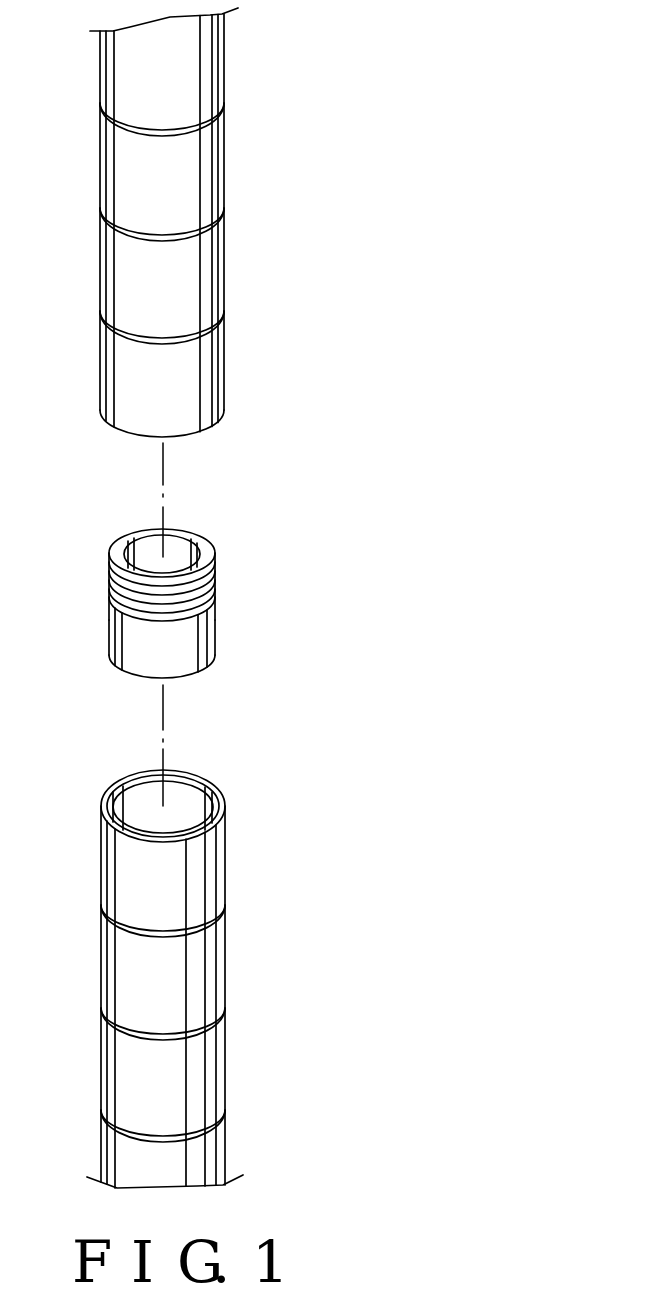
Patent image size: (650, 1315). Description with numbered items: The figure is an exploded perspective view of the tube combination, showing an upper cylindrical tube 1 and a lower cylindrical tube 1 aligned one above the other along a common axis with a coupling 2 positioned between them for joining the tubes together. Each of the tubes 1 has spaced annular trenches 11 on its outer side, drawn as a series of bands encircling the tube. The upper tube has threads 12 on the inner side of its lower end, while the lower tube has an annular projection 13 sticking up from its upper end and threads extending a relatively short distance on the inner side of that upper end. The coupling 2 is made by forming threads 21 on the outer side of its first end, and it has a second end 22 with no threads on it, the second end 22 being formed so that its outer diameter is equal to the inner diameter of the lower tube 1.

The cylindrical tube 1 is at (184, 598).
The annular trench 11 is at (192, 1135).
The threads 12 is at (137, 437).
The annular projection 13 is at (223, 805).
The coupling 2 is at (181, 603).
The threads 21 is at (217, 580).
The second end 22 is at (183, 647).